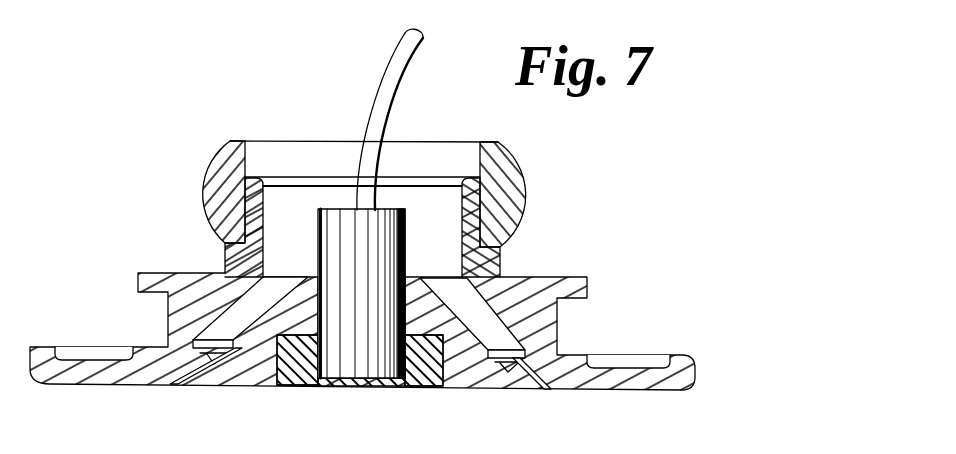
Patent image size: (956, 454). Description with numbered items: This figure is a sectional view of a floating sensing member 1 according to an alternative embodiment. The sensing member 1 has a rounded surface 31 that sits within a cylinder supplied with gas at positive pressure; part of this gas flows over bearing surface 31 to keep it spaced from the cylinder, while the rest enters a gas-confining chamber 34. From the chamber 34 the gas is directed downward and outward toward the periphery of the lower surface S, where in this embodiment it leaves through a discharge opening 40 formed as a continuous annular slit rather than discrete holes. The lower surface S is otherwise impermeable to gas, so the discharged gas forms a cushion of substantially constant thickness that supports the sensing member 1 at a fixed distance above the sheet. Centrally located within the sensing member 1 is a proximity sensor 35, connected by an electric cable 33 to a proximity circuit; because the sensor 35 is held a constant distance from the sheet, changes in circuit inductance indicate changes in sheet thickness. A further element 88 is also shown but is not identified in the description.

The floating sensing member 1 is at (540, 253).
The rounded surface 31 is at (212, 183).
The electric cable 33 is at (383, 82).
The gas-confining chamber 34 is at (297, 193).
The proximity sensor 35 is at (387, 210).
The discharge opening 40 is at (182, 378).
The snap tab 88 is at (195, 370).
The lower surface S is at (303, 387).